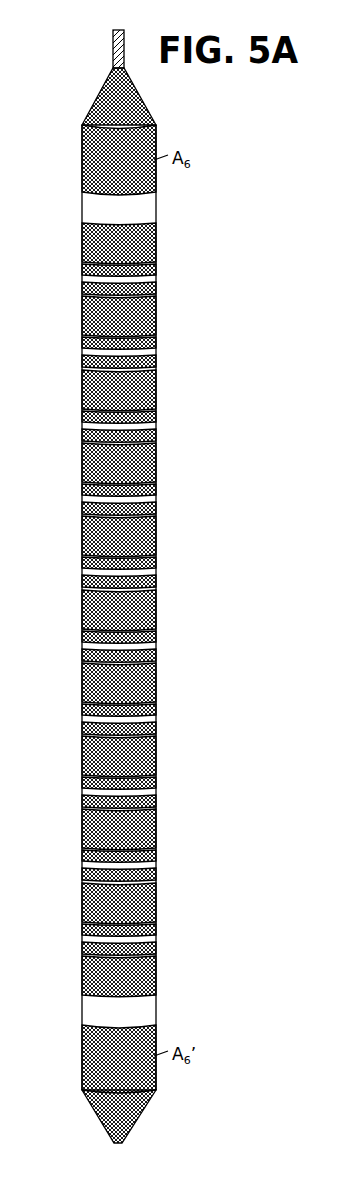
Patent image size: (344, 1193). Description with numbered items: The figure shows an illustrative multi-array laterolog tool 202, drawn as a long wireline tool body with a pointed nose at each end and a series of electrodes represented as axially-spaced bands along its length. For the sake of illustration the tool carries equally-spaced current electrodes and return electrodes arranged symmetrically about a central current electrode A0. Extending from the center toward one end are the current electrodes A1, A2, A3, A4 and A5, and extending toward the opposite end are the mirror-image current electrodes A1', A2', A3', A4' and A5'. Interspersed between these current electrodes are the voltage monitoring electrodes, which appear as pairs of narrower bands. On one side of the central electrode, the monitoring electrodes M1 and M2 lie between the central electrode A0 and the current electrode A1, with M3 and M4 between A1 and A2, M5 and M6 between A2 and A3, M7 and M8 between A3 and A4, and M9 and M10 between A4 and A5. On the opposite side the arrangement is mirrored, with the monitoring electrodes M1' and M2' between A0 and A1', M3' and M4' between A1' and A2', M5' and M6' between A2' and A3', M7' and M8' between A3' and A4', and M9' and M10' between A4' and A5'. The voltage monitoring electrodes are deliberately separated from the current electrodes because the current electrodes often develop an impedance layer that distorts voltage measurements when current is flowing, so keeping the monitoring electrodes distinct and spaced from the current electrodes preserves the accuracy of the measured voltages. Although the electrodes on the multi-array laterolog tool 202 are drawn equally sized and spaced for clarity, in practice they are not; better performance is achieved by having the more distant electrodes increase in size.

The multi-array laterolog tool 202 is at (83, 119).
The current electrode A5 is at (136, 243).
The current electrode A4 is at (136, 316).
The current electrode A3 is at (136, 390).
The current electrode A2 is at (136, 463).
The current electrode A1 is at (136, 536).
The current electrode A0 is at (154, 610).
The current electrode A1' is at (139, 683).
The current electrode A2' is at (139, 756).
The current electrode A3' is at (139, 829).
The current electrode A4' is at (139, 903).
The current electrode A5' is at (139, 976).
The voltage monitoring electrode M1 is at (95, 579).
The voltage monitoring electrode M2 is at (95, 561).
The voltage monitoring electrode M3 is at (95, 506).
The voltage monitoring electrode M4 is at (95, 487).
The voltage monitoring electrode M5 is at (95, 433).
The voltage monitoring electrode M6 is at (95, 415).
The voltage monitoring electrode M7 is at (95, 359).
The voltage monitoring electrode M8 is at (95, 341).
The voltage monitoring electrode M9 is at (95, 286).
The voltage monitoring electrode M10 is at (95, 267).
The voltage monitoring electrode M1' is at (95, 635).
The voltage monitoring electrode M2' is at (95, 653).
The voltage monitoring electrode M3' is at (95, 707).
The voltage monitoring electrode M4' is at (95, 726).
The voltage monitoring electrode M5' is at (95, 781).
The voltage monitoring electrode M6' is at (95, 799).
The voltage monitoring electrode M7' is at (95, 853).
The voltage monitoring electrode M8' is at (95, 872).
The voltage monitoring electrode M9' is at (95, 927).
The voltage monitoring electrode M10' is at (95, 946).